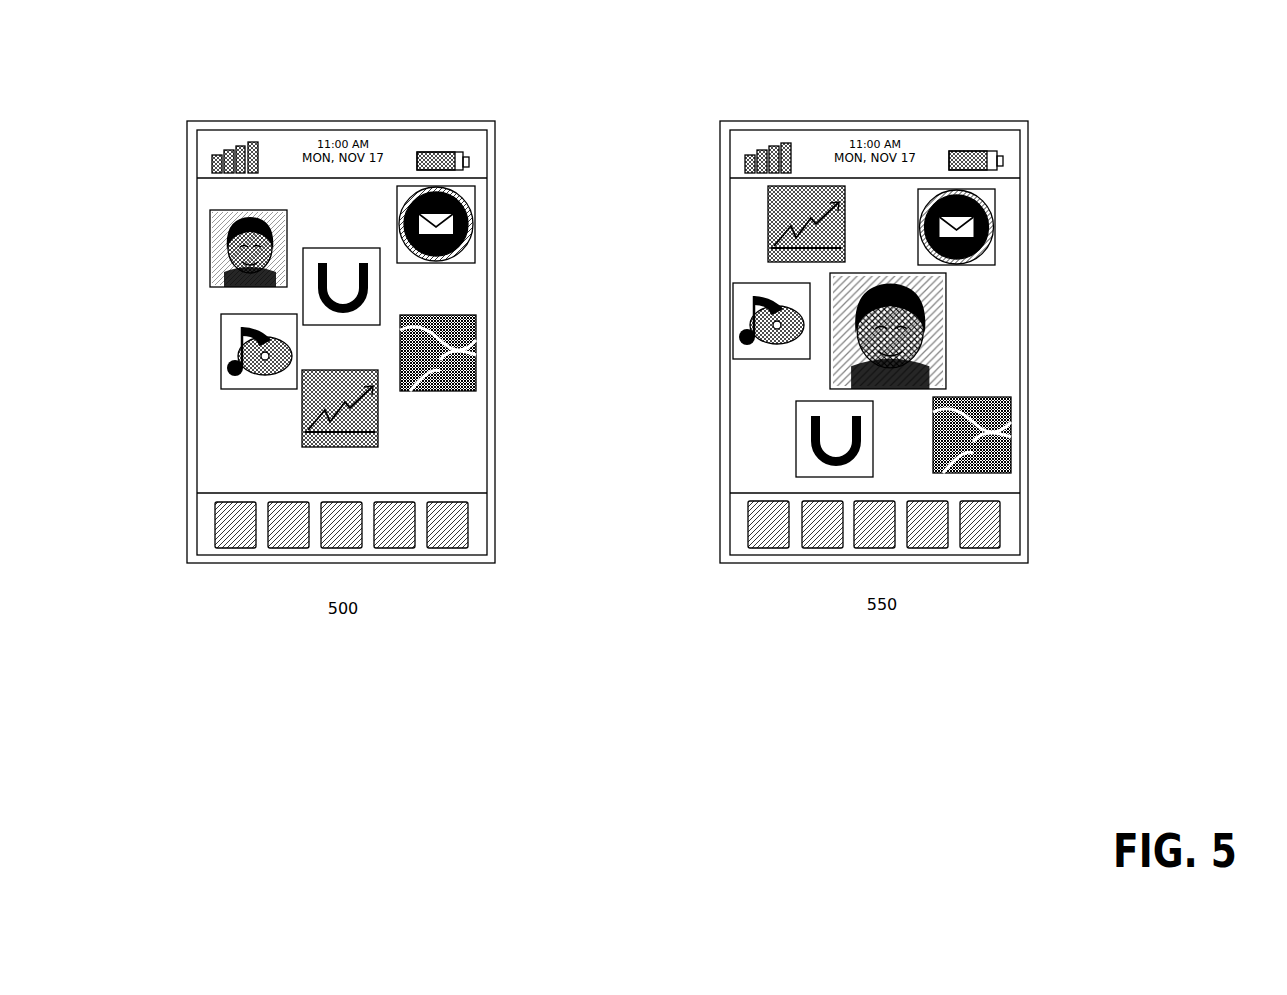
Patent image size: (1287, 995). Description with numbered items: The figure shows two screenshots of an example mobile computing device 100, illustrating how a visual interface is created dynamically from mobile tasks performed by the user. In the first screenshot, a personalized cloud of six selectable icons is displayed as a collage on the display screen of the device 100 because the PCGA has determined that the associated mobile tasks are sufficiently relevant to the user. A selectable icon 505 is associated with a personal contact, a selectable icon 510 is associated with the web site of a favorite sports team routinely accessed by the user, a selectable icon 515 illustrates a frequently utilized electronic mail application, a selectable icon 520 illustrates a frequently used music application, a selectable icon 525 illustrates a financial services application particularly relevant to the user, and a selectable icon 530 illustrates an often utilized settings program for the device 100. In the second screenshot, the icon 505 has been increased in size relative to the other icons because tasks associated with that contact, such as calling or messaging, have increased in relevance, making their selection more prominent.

The mobile computing device 100 is at (480, 121).
The selectable icon 505 is at (248, 217).
The selectable icon 510 is at (343, 250).
The selectable icon 515 is at (437, 194).
The selectable icon 520 is at (222, 382).
The selectable icon 525 is at (328, 442).
The selectable icon 530 is at (447, 392).